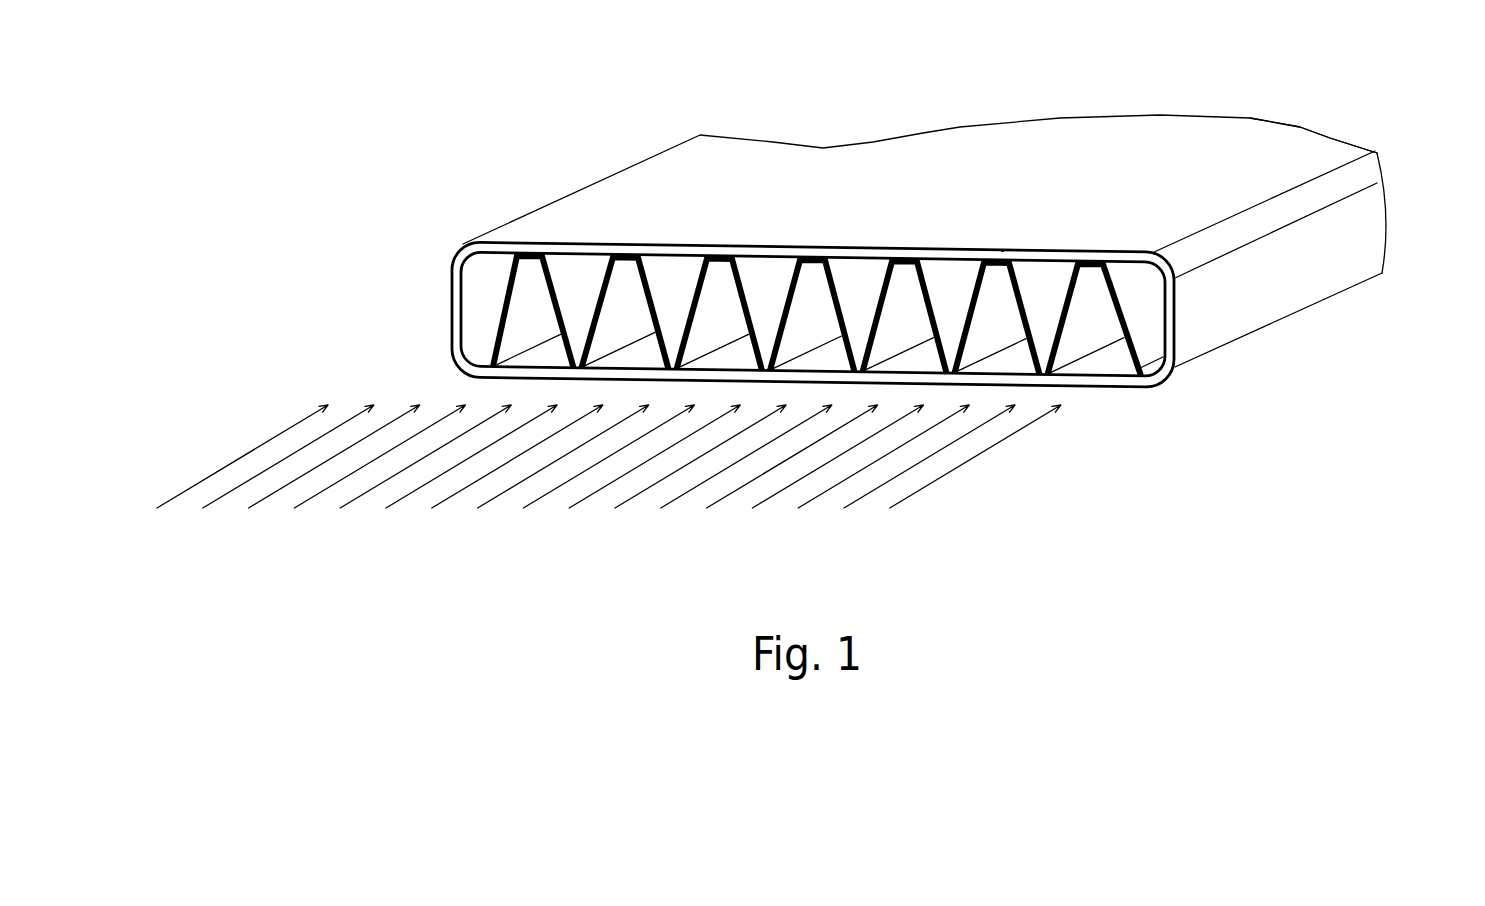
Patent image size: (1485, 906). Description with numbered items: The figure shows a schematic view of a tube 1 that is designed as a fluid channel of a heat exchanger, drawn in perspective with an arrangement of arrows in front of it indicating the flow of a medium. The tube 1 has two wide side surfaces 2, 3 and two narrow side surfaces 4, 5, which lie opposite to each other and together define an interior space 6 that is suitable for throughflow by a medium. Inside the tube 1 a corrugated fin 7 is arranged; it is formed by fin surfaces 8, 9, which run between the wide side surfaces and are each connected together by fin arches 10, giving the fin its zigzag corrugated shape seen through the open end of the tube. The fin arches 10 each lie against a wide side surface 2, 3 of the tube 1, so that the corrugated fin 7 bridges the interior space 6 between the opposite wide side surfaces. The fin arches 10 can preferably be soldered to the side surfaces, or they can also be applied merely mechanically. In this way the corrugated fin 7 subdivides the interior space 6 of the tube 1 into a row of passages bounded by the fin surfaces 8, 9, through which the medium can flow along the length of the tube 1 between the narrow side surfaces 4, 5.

The tube 1 is at (1103, 150).
The wide side surface 2 is at (1333, 148).
The wide side surface 3 is at (1047, 394).
The narrow side surface 4 is at (1393, 222).
The narrow side surface 5 is at (455, 242).
The interior space 6 is at (1152, 350).
The corrugated fin 7 is at (1082, 338).
The fin surface 8 is at (870, 292).
The fin surface 9 is at (800, 283).
The fin arch 10 is at (999, 239).